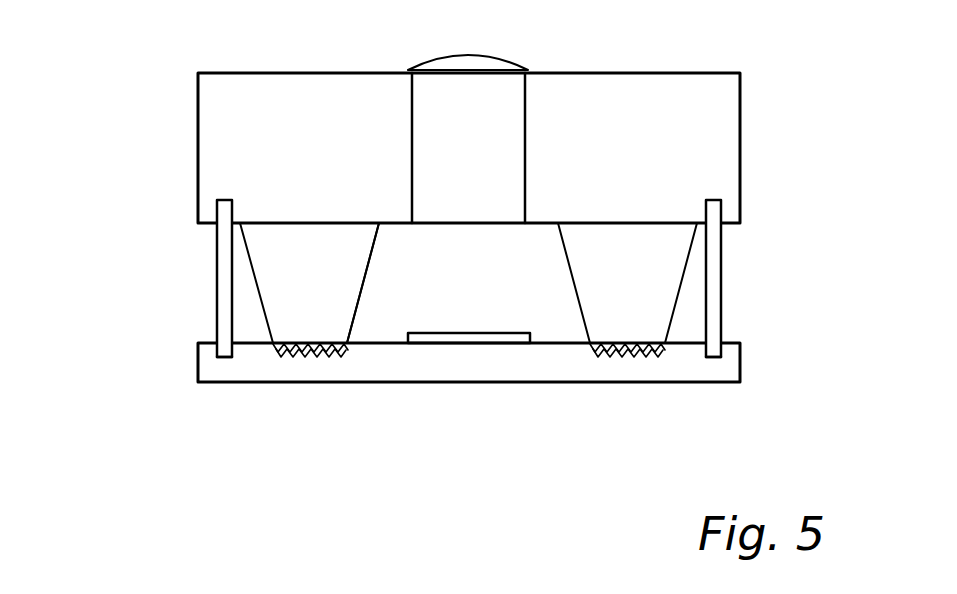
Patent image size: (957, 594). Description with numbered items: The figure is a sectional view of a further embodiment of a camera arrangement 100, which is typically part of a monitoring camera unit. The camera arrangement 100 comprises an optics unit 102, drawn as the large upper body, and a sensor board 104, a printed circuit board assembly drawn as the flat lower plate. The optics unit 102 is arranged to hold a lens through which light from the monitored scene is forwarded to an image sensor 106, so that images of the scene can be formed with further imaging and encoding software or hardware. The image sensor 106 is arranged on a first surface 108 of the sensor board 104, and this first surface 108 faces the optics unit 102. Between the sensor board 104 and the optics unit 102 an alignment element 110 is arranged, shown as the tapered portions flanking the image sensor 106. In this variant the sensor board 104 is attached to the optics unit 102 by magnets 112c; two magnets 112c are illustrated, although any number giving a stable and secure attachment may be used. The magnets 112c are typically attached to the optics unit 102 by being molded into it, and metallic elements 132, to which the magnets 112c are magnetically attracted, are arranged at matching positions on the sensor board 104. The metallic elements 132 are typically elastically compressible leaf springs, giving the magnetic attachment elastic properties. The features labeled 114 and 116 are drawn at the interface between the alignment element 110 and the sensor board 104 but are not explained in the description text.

The camera arrangement 100 is at (167, 90).
The optics unit 102 is at (636, 73).
The sensor board 104 is at (523, 363).
The image sensor 106 is at (475, 333).
The first surface 108 is at (373, 343).
The alignment element 110 is at (332, 280).
The magnet 112c is at (217, 282).
The adhesive / solder interface 114 is at (318, 358).
The bond layer 116 is at (288, 358).
The metallic element 132 is at (224, 357).